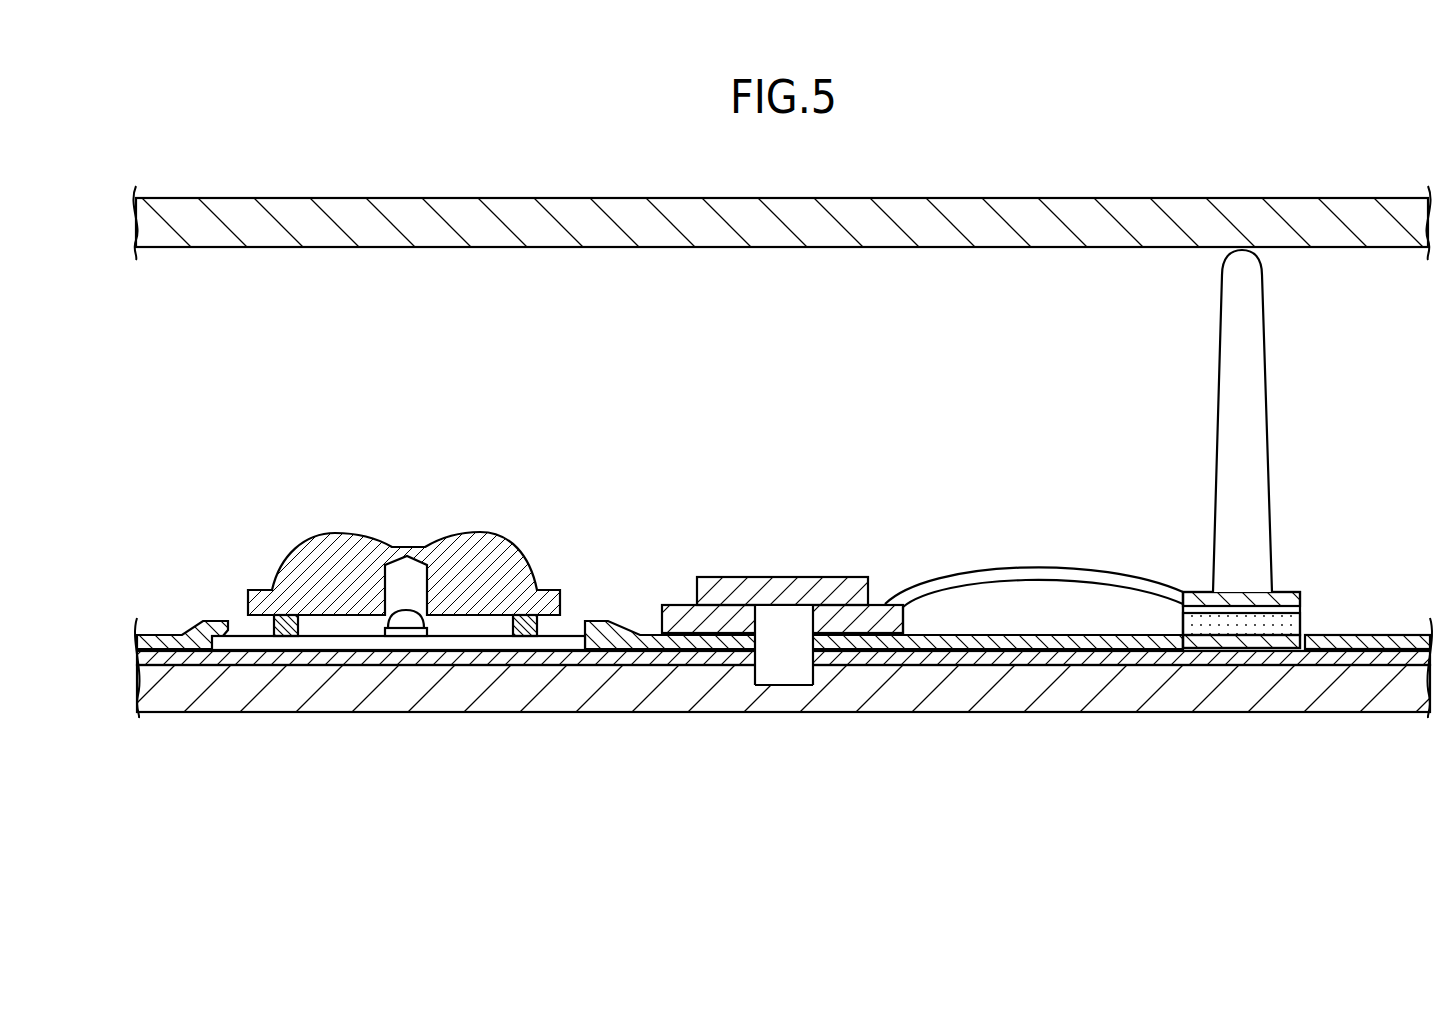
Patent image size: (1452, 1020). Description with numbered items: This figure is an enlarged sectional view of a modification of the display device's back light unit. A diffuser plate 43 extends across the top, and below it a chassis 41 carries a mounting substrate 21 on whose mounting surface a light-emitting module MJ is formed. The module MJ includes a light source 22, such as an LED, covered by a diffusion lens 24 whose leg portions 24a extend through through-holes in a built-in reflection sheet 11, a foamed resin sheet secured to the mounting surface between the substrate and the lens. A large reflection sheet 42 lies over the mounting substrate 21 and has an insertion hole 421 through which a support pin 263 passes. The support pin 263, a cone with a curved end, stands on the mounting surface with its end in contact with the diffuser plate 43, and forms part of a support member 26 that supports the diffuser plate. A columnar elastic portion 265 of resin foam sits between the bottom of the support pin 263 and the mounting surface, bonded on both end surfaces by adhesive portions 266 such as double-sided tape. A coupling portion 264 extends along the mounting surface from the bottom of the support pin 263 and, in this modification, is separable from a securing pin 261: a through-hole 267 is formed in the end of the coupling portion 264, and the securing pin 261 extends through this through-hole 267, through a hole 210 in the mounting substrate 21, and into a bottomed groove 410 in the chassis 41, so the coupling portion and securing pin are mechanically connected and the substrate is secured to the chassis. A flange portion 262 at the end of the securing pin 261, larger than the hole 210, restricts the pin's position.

The diffuser plate 43 is at (288, 248).
The chassis 41 is at (172, 701).
The mounting substrate 21 is at (577, 665).
The reflection sheet 42 is at (165, 639).
The insertion hole 421 is at (1305, 635).
The built-in reflection sheet 11 is at (572, 634).
The flange portion 262 is at (720, 592).
The securing pin 261 is at (790, 665).
The hole 210 is at (757, 668).
The groove 410 is at (800, 684).
The through-hole 267 is at (808, 616).
The support member 26 is at (1017, 518).
The coupling portion 264 is at (1086, 569).
The adhesive portion 266 is at (1292, 605).
The elastic portion 265 is at (1182, 631).
The support pin 263 is at (1256, 331).
The leg portion 24a is at (284, 636).
The light source 22 is at (372, 634).
The diffusion lens 24 is at (331, 553).
The light-emitting module MJ is at (409, 516).